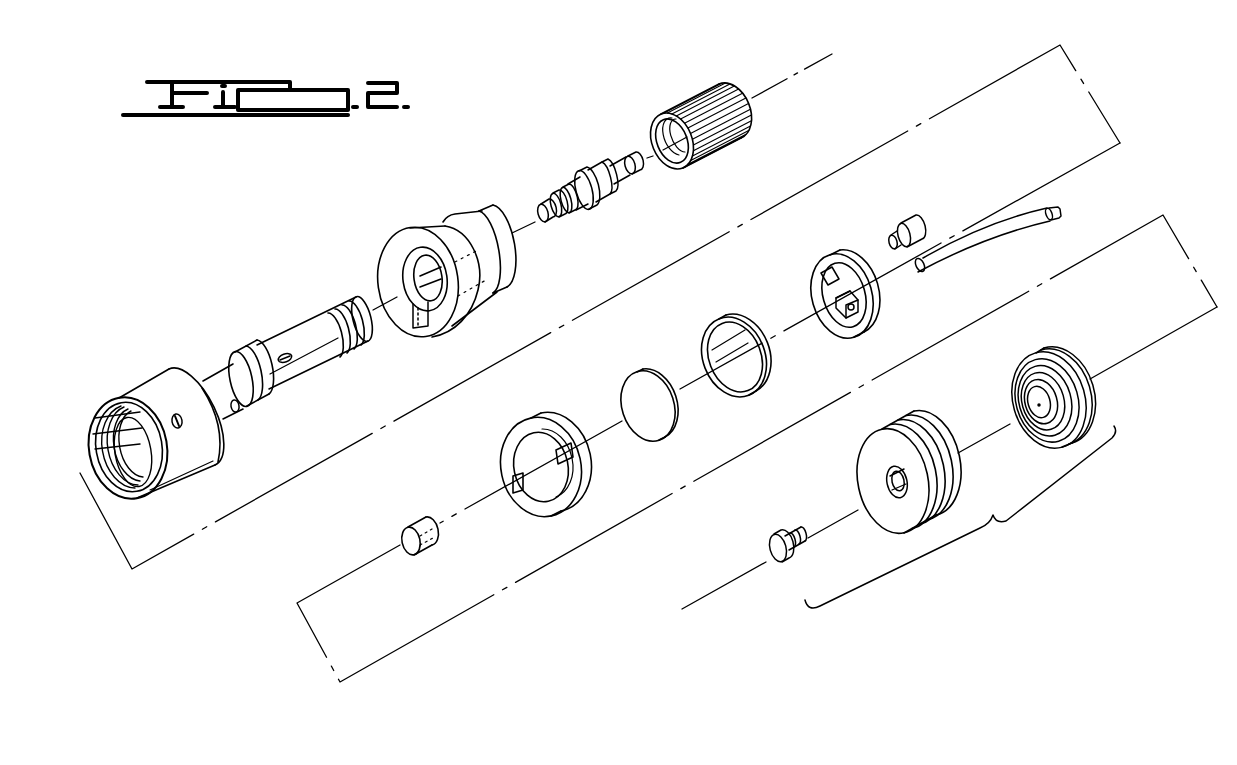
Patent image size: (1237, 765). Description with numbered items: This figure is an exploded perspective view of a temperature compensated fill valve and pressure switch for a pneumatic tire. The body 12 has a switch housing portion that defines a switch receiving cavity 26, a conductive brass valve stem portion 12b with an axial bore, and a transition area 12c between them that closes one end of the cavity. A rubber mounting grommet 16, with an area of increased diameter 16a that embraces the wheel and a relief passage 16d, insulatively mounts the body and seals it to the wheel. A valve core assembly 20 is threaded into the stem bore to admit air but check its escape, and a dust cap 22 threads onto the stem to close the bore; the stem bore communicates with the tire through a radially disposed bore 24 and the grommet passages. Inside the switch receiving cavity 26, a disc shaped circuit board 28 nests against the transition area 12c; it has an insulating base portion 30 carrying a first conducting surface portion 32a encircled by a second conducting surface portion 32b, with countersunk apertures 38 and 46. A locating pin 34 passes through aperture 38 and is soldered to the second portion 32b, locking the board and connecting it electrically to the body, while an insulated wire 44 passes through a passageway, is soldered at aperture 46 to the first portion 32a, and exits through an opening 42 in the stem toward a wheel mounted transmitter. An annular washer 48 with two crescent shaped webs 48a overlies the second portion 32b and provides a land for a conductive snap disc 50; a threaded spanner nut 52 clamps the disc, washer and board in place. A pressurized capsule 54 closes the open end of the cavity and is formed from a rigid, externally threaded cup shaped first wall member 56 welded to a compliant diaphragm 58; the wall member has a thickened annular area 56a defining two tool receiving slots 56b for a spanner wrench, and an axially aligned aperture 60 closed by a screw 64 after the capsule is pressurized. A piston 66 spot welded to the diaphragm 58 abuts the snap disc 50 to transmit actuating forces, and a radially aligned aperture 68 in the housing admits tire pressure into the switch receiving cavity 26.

The body 12 is at (168, 492).
The valve stem portion 12b is at (299, 338).
The transition area 12c is at (223, 393).
The rubber mounting grommet 16 is at (420, 283).
The area of increased diameter 16a is at (405, 263).
The relief passage 16d is at (408, 330).
The valve core assembly 20 is at (570, 186).
The dust cap 22 is at (685, 115).
The radially disposed bore 24 is at (243, 413).
The switch receiving cavity 26 is at (97, 421).
The circuit board 28 is at (853, 293).
The base portion 30 is at (883, 302).
The first conducting surface portion 32a is at (845, 296).
The second conducting surface portion 32b is at (860, 334).
The locating pin 34 is at (915, 218).
The aperture 38 is at (830, 276).
The opening 42 is at (288, 362).
The insulated electrically conducting wire 44 is at (990, 228).
The aperture 46 is at (847, 306).
The annular washer 48 is at (710, 358).
The crescent shaped webs 48a is at (718, 335).
The snap disc 50 is at (633, 386).
The spanner nut 52 is at (528, 424).
The pressurized capsule 54 is at (960, 517).
The first rigid cup shaped wall member 56 is at (910, 479).
The area of increased wall thickness 56a is at (892, 504).
The tool receiving slots 56b is at (906, 481).
The diaphragm 58 is at (1092, 418).
The axially aligned aperture 60 is at (892, 474).
The screw 64 is at (770, 548).
The piston 66 is at (423, 528).
The radially aligned aperture 68 is at (180, 422).